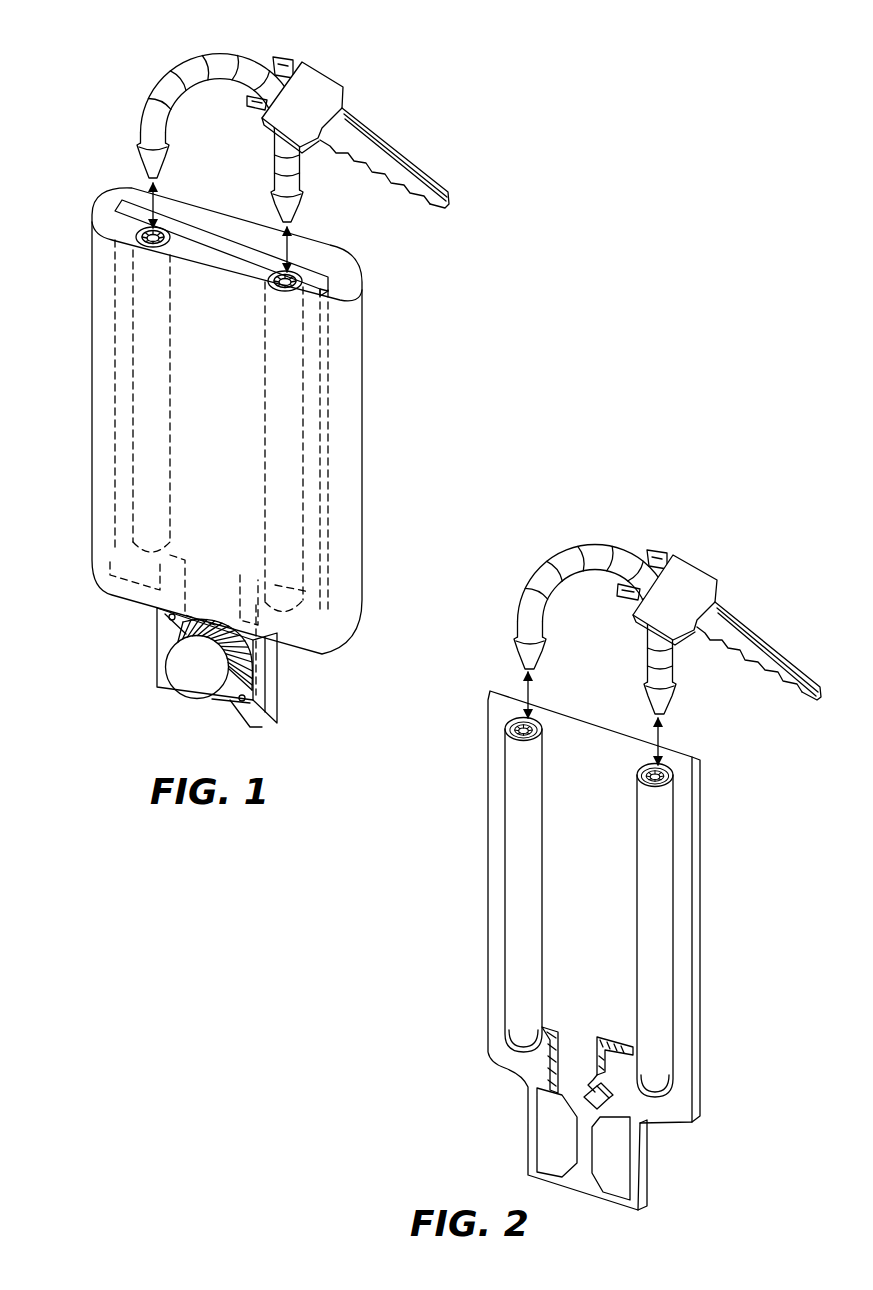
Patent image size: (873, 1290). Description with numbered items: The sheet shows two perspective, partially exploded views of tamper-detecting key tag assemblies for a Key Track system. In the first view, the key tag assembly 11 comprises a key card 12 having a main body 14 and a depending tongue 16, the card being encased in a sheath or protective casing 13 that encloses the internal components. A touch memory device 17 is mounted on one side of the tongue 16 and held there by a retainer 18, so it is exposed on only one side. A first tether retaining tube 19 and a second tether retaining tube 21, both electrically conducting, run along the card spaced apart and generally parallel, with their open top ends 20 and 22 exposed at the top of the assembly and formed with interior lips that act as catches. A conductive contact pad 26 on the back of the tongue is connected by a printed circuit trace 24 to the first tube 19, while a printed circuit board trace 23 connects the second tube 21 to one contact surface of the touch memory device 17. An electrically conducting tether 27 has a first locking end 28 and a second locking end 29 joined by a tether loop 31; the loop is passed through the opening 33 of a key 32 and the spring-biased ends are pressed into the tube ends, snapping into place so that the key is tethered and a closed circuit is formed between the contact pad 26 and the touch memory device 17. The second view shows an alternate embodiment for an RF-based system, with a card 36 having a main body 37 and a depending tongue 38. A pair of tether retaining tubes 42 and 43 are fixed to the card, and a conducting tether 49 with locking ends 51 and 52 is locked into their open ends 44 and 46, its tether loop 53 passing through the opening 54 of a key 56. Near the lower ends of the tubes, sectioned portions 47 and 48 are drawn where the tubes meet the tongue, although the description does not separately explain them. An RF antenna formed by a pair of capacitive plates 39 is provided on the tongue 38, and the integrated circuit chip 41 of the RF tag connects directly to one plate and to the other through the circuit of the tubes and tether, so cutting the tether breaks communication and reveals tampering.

In FIG. 1, the key tag assembly 11 is at (62, 96).
In FIG. 1, the key card 12 is at (330, 400).
In FIG. 1, the sheath or protective casing 13 is at (362, 518).
In FIG. 1, the main body 14 is at (183, 458).
In FIG. 1, the depending tongue 16 is at (160, 688).
In FIG. 1, the touch memory device 17 is at (185, 667).
In FIG. 1, the retainer 18 is at (243, 715).
In FIG. 1, the first tether retaining tube 19 is at (287, 437).
In FIG. 1, the open top end 20 is at (330, 275).
In FIG. 1, the second tether retaining tube 21 is at (143, 398).
In FIG. 1, the open top end 22 is at (135, 232).
In FIG. 1, the printed circuit board trace 23 is at (150, 585).
In FIG. 1, the printed circuit trace 24 is at (273, 587).
In FIG. 1, the conductive contact pad 26 is at (270, 675).
In FIG. 1, the electrically conducting tether 27 is at (143, 92).
In FIG. 1, the first locking end 28 is at (300, 206).
In FIG. 1, the second locking end 29 is at (148, 150).
In FIG. 1, the tether loop 31 is at (202, 70).
In FIG. 1, the key 32 is at (322, 98).
In FIG. 1, the opening 33 is at (288, 65).
In FIG. 2, the card 36 is at (700, 925).
In FIG. 2, the main body 37 is at (560, 932).
In FIG. 2, the depending tongue 38 is at (642, 1170).
In FIG. 2, the capacitive plates 39 is at (603, 1154).
In FIG. 2, the integrated circuit chip 41 is at (617, 1103).
In FIG. 2, the tether retaining tube 42 is at (653, 988).
In FIG. 2, the tether retaining tube 43 is at (520, 877).
In FIG. 2, the open end 44 is at (677, 770).
In FIG. 2, the open end 46 is at (512, 722).
In FIG. 2, the slot 47 is at (535, 1075).
In FIG. 2, the slot 48 is at (607, 1067).
In FIG. 2, the conducting tether 49 is at (518, 592).
In FIG. 2, the locking end 51 is at (520, 650).
In FIG. 2, the locking end 52 is at (667, 703).
In FIG. 2, the tether loop 53 is at (568, 552).
In FIG. 2, the opening 54 is at (657, 552).
In FIG. 2, the key 56 is at (693, 590).